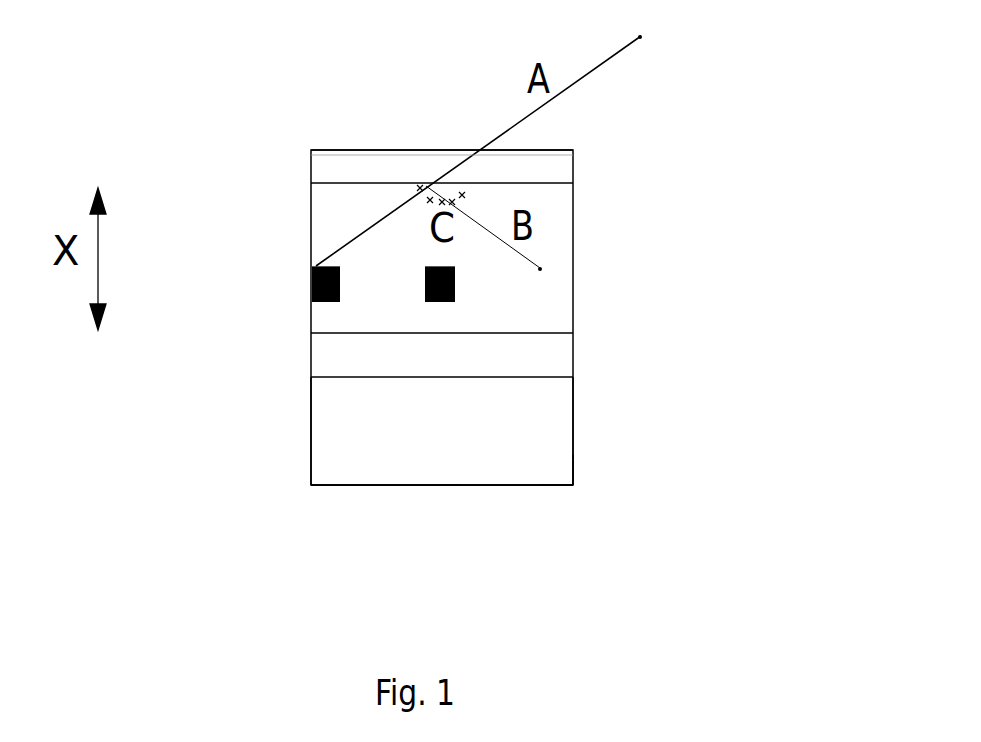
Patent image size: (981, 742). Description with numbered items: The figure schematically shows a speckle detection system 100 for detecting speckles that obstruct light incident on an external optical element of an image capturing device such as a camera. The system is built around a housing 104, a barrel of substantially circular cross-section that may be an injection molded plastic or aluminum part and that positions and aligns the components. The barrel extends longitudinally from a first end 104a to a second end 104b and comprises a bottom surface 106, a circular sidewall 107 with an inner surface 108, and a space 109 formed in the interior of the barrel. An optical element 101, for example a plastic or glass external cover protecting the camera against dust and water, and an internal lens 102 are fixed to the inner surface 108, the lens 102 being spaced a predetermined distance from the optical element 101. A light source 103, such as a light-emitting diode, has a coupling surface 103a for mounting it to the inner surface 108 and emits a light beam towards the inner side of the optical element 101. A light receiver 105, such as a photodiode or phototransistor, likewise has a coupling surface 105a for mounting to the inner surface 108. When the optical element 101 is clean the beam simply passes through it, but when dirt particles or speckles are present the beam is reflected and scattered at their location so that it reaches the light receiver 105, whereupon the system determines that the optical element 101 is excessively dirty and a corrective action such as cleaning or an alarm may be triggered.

The speckle detection system 100 is at (735, 137).
The optical element 101 is at (550, 165).
The lens 102 is at (573, 360).
The light source 103 is at (313, 291).
The coupling surface 103a is at (312, 268).
The housing 104 is at (316, 443).
The first end 104a is at (346, 150).
The second end 104b is at (358, 492).
The light receiver 105 is at (455, 290).
The coupling surface 105a is at (455, 285).
The bottom surface 106 is at (553, 488).
The circular sidewall 107 is at (573, 428).
The inner surface 108 is at (570, 452).
The space 109 is at (457, 438).